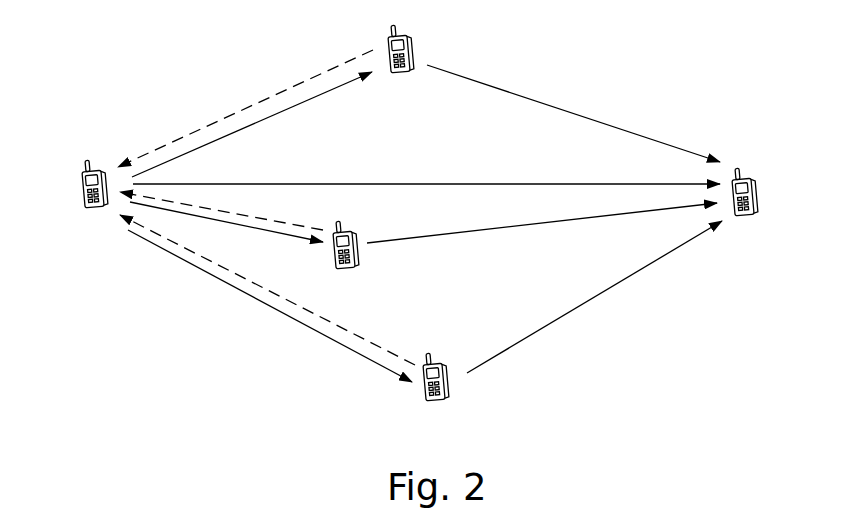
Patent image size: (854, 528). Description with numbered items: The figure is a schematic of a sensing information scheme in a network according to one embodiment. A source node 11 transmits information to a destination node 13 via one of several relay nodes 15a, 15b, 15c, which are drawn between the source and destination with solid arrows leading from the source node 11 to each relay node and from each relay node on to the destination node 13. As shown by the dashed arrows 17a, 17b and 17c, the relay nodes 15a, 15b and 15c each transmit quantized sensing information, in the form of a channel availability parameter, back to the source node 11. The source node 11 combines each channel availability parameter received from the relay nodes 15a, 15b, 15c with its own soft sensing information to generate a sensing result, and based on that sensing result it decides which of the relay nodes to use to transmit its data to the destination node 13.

The source node 11 is at (83, 192).
The destination node 13 is at (753, 205).
The relay node 15a is at (402, 73).
The relay node 15b is at (355, 264).
The relay node 15c is at (440, 372).
The arrow 17a is at (273, 100).
The arrow 17b is at (275, 220).
The arrow 17c is at (343, 323).